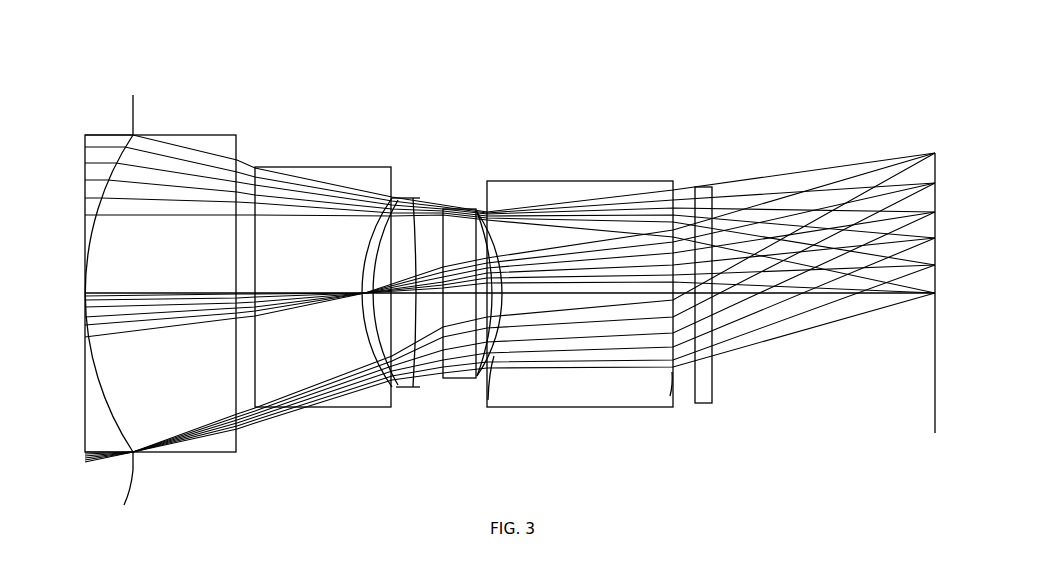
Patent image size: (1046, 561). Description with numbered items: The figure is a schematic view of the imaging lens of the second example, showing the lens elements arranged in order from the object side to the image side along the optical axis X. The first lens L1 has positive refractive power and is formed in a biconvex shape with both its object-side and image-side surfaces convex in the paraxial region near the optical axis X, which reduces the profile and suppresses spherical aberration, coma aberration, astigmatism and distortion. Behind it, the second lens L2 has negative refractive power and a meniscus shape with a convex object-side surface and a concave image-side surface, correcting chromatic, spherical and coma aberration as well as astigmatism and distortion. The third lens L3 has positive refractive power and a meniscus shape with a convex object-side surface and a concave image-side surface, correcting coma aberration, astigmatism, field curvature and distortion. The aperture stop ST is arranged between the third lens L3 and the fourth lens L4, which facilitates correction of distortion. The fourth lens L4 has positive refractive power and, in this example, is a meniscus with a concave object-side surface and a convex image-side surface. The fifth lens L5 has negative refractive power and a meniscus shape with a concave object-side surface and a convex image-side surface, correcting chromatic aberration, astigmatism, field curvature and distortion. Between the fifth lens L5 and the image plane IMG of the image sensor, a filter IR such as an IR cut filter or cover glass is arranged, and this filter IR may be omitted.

The first lens L1 is at (212, 135).
The second lens L2 is at (357, 167).
The third lens L3 is at (413, 197).
The fourth lens L4 is at (457, 208).
The fifth lens L5 is at (603, 181).
The filter IR is at (697, 187).
The image plane IMG is at (935, 424).
The aperture stop ST is at (123, 319).
The optical axis X is at (102, 292).